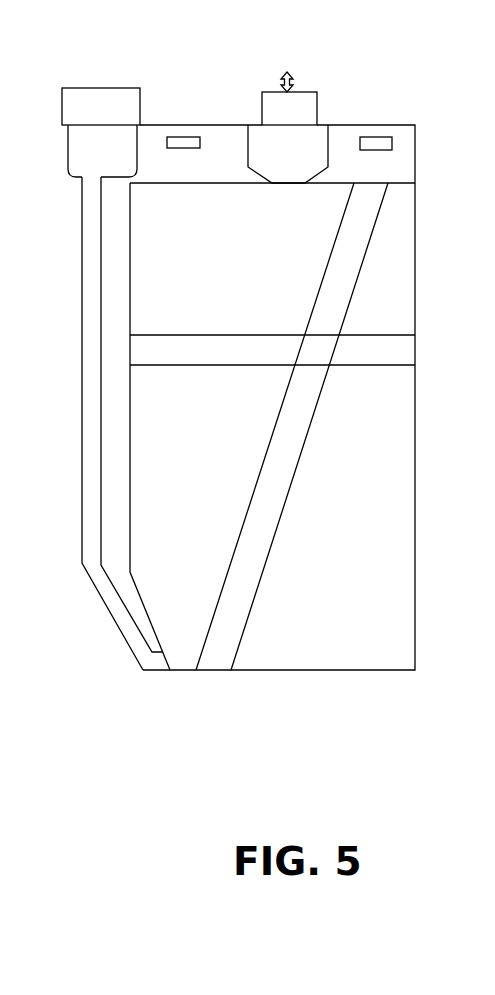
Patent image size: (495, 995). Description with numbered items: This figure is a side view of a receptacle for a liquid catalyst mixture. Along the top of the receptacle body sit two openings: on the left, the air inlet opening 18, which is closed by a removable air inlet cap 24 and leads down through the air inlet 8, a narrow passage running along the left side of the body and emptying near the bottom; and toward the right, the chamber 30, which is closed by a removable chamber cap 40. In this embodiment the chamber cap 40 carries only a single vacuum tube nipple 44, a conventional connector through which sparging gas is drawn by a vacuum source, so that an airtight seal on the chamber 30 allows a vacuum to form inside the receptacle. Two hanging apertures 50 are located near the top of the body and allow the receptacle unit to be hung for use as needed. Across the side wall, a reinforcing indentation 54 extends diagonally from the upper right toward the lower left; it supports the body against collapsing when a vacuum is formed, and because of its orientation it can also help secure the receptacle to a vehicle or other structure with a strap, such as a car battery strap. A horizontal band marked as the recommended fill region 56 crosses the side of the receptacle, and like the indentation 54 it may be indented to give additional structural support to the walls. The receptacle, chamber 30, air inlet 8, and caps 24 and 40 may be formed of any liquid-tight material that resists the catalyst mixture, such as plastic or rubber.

The air inlet 8 is at (83, 472).
The air inlet opening 18 is at (115, 168).
The air inlet cap 24 is at (102, 100).
The chamber 30 is at (307, 168).
The chamber cap 40 is at (315, 113).
The vacuum tube nipple 44 is at (293, 71).
The hanging aperture 50 is at (183, 140).
The reinforcing indentation 54 is at (300, 468).
The recommended fill region 56 is at (396, 365).